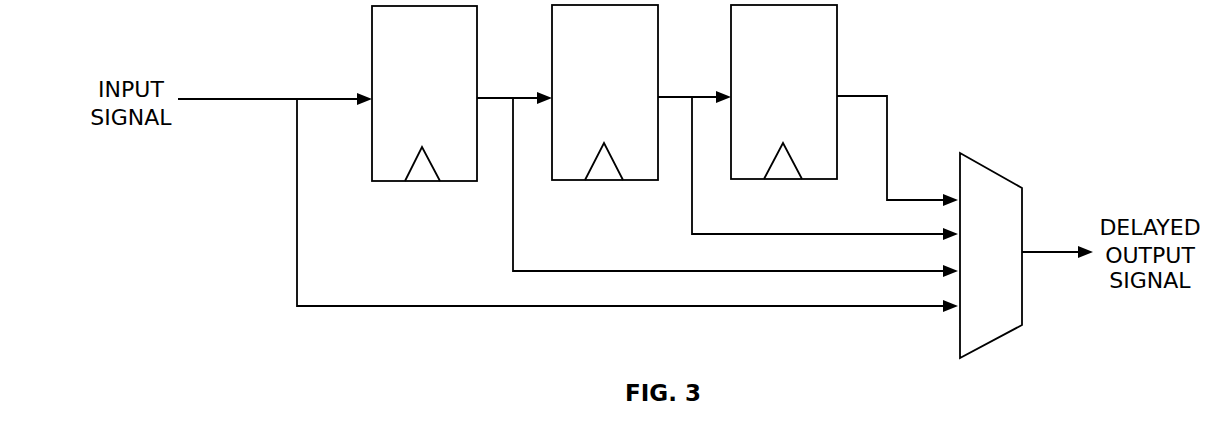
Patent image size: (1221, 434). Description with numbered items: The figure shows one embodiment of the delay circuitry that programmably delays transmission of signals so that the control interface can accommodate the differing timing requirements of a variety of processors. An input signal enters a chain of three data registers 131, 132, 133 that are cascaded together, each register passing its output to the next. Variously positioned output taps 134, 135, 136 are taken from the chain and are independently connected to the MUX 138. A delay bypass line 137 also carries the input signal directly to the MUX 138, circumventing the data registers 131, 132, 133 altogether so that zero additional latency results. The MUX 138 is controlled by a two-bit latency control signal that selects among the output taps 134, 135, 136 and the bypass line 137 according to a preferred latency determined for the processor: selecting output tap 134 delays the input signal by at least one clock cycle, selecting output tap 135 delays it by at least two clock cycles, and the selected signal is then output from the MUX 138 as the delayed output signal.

The data register 131 is at (442, 52).
The data register 132 is at (628, 52).
The data register 133 is at (802, 52).
The output tap 134 is at (548, 273).
The output tap 135 is at (742, 235).
The output tap 136 is at (887, 121).
The delay bypass line 137 is at (315, 308).
The MUX 138 is at (972, 305).